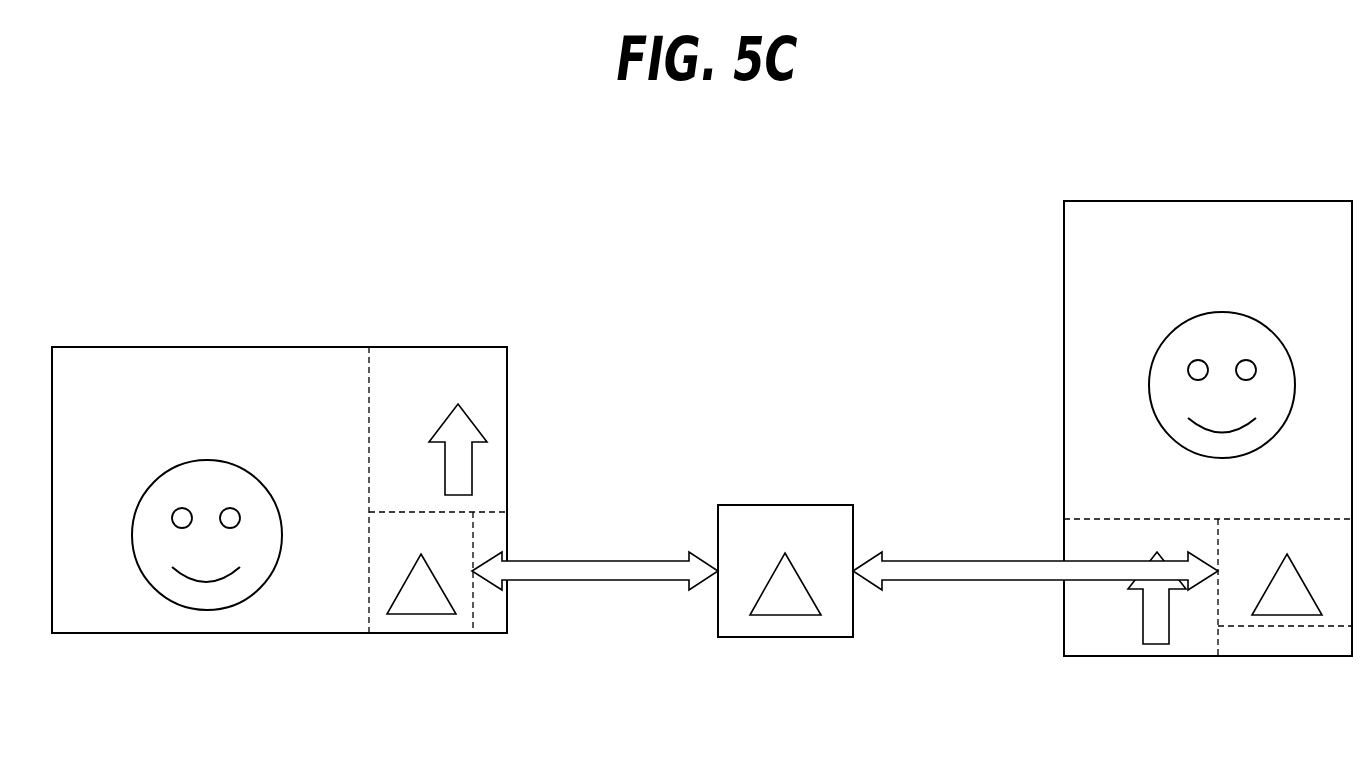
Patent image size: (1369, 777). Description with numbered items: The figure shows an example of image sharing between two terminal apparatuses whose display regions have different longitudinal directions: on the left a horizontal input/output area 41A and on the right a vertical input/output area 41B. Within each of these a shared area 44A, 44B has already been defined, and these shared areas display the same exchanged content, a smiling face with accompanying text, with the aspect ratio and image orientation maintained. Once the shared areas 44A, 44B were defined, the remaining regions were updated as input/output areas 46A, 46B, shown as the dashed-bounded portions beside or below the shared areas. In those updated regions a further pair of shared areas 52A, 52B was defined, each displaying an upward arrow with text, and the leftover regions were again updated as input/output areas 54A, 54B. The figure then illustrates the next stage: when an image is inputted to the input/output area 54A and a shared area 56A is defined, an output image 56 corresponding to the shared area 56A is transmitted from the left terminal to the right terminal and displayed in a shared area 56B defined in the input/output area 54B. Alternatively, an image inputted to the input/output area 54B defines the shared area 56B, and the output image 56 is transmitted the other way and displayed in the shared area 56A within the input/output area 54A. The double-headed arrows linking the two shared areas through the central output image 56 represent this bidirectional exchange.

The input/output area 41A is at (121, 347).
The shared area 44A is at (250, 355).
The input/output area 46A is at (415, 350).
The shared area 52A is at (500, 437).
The input/output area 54A is at (499, 614).
The shared area 56A is at (428, 629).
The output image 56 is at (795, 632).
The input/output area 41B is at (1201, 201).
The shared area 44B is at (1072, 452).
The input/output area 46B is at (1068, 640).
The shared area 52B is at (1178, 647).
The input/output area 54B is at (1253, 647).
The shared area 56B is at (1317, 623).